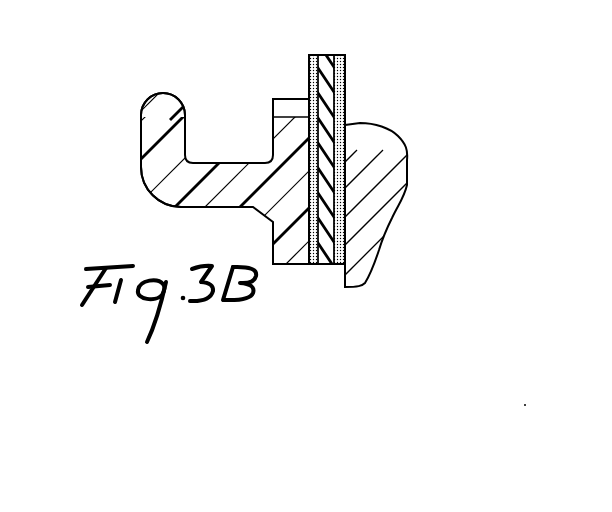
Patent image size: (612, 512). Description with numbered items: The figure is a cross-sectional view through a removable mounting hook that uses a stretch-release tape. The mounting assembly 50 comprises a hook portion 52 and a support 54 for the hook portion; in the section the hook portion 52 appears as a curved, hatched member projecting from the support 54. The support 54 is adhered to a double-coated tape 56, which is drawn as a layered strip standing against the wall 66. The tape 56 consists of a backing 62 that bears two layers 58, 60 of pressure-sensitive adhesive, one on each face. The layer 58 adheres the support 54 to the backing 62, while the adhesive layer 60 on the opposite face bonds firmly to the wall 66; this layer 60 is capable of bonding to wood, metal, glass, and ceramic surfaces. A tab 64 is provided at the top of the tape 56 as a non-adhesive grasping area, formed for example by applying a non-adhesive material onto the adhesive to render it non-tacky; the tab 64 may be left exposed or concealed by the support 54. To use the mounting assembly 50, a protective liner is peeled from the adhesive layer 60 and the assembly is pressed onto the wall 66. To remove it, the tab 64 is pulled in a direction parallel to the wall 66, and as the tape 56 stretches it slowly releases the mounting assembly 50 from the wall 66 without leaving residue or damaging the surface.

The mounting assembly 50 is at (142, 113).
The hook portion 52 is at (153, 173).
The support 54 is at (275, 225).
The double-coated tape 56 is at (320, 175).
The layer of pressure-sensitive adhesive 58 is at (302, 252).
The adhesive layer 60 is at (338, 243).
The backing 62 is at (325, 266).
The tab 64 is at (309, 63).
The wall 66 is at (386, 130).